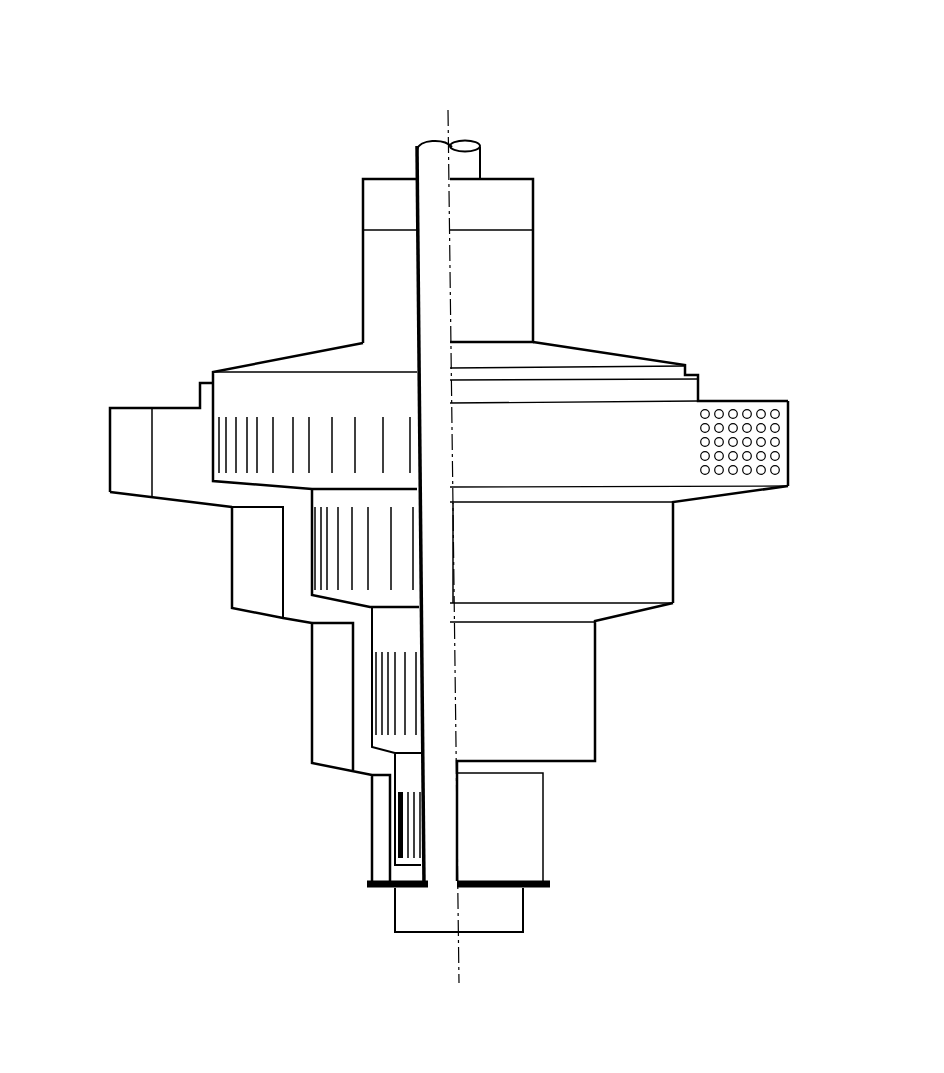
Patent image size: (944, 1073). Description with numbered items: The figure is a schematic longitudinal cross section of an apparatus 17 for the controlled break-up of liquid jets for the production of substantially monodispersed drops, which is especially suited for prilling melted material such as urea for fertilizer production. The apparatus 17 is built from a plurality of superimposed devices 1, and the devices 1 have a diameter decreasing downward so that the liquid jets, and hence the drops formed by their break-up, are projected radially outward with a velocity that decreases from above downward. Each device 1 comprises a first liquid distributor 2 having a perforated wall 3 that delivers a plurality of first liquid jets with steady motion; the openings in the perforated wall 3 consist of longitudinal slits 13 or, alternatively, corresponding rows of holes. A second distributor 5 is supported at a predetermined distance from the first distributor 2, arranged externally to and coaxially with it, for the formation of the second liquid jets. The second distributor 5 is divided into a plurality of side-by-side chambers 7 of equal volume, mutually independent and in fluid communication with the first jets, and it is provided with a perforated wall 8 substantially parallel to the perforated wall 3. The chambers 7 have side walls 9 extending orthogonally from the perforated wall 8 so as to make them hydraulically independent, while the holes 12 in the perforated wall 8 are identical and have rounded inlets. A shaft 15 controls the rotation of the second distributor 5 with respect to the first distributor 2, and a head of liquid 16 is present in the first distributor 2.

The device for the controlled break-up of liquid jets 1 is at (595, 702).
The first liquid distributor 2 is at (250, 398).
The perforated wall 3 is at (263, 455).
The second distributor 5 is at (110, 460).
The chambers 7 is at (133, 433).
The perforated wall 8 is at (782, 422).
The side walls 9 is at (153, 460).
The holes 12 is at (762, 475).
The longitudinal slits 13 is at (310, 423).
The shaft 15 is at (477, 163).
The head of liquid 16 is at (520, 227).
The apparatus for the controlled break-up of liquid jets 17 is at (790, 127).